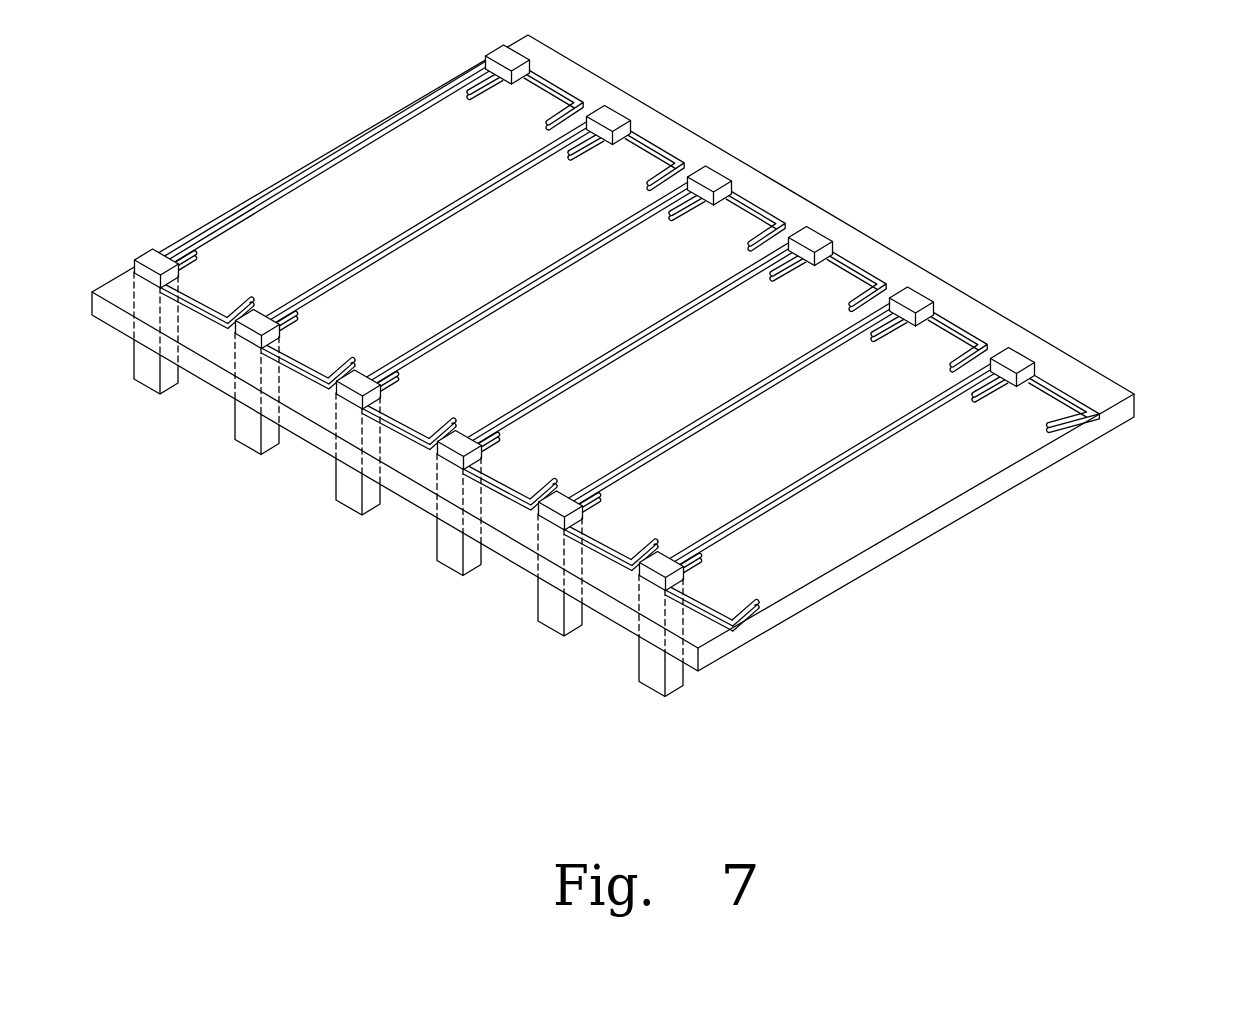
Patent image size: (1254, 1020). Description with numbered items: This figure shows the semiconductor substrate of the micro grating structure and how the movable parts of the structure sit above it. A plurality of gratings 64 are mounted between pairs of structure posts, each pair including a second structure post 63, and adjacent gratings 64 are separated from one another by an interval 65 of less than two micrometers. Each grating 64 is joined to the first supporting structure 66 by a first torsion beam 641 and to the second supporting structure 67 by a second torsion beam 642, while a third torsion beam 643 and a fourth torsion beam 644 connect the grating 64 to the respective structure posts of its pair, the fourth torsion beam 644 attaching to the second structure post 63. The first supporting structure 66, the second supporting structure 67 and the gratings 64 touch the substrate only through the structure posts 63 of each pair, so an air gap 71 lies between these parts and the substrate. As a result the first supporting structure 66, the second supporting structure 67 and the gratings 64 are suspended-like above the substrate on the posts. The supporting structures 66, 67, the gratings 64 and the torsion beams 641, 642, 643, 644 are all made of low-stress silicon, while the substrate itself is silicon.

The second structure post 63 is at (1015, 350).
The grating 64 is at (862, 520).
The interval 65 is at (870, 452).
The first torsion beam 641 is at (768, 593).
The second torsion beam 642 is at (1040, 447).
The third torsion beam 643 is at (702, 549).
The fourth torsion beam 644 is at (978, 393).
The first supporting structure 66 is at (698, 628).
The second supporting structure 67 is at (1085, 390).
The air gap 71 is at (505, 582).